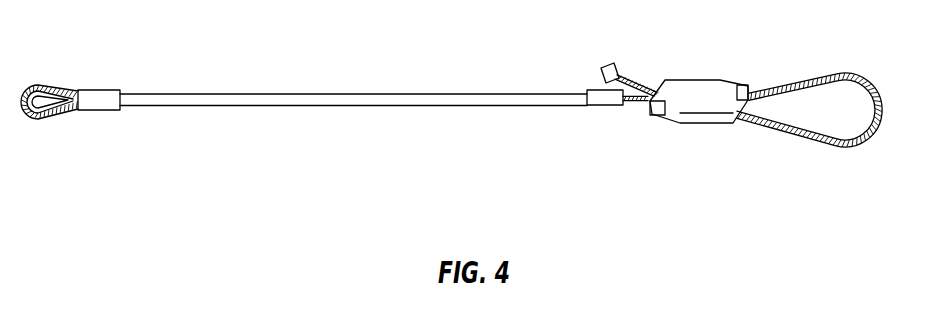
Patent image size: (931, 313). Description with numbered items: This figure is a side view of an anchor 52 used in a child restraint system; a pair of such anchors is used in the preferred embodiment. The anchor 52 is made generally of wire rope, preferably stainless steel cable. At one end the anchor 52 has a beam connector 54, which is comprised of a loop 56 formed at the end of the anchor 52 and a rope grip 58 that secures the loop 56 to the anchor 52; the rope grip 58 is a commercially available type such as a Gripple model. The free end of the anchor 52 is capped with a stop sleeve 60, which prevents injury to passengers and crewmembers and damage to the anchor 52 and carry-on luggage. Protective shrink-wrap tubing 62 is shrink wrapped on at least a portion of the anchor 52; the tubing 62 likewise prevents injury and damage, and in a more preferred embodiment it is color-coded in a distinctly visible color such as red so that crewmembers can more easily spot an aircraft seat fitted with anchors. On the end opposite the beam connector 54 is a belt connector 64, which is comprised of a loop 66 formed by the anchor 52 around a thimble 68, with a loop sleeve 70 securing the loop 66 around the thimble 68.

The anchor 52 is at (433, 128).
The beam connector 54 is at (780, 173).
The loop 56 is at (850, 68).
The rope grip 58 is at (708, 123).
The stop sleeve 60 is at (613, 64).
The protective shrink-wrap tubing 62 is at (460, 94).
The belt connector 64 is at (132, 178).
The loop 66 is at (44, 84).
The thimble 68 is at (36, 108).
The loop sleeve 70 is at (102, 110).